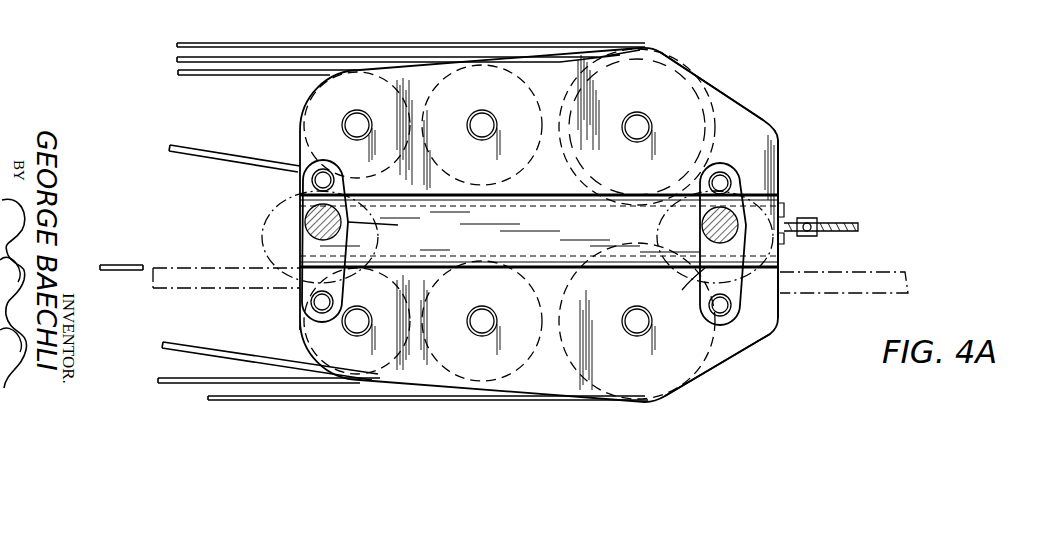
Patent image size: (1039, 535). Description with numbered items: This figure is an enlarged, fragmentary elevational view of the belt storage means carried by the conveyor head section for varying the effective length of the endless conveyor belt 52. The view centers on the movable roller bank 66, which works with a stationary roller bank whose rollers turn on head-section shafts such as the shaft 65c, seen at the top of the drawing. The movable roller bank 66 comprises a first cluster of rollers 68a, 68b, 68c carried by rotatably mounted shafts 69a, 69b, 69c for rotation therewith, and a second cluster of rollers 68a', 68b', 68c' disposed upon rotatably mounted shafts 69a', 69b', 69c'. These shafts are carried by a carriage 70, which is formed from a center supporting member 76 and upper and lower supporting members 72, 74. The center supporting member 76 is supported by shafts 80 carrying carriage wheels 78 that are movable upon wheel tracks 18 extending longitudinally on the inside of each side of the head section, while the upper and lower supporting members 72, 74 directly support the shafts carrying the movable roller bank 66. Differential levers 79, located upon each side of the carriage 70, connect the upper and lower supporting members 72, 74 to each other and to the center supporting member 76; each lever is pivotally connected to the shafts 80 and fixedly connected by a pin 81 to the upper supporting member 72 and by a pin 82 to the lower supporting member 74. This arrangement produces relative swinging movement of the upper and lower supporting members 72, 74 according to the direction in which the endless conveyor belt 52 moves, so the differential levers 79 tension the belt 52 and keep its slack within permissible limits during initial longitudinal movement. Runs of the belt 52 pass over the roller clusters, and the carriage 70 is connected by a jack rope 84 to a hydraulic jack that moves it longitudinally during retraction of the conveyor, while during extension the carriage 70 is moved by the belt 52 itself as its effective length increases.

The wheel tracks 18 is at (190, 268).
The endless conveyor belt 52 is at (248, 42).
The shaft 65c is at (439, 7).
The movable roller bank 66 is at (731, 81).
The roller 68a is at (325, 128).
The roller 68b is at (501, 103).
The roller 68c is at (637, 109).
The roller 68a' is at (357, 351).
The roller 68b' is at (481, 348).
The roller 68c' is at (637, 340).
The shaft 69a is at (302, 136).
The shaft 69b is at (477, 141).
The shaft 69c is at (627, 141).
The shaft 69a' is at (304, 330).
The shaft 69b' is at (474, 335).
The shaft 69c' is at (621, 341).
The carriage 70 is at (756, 94).
The upper supporting member 72 is at (780, 128).
The lower supporting member 74 is at (756, 336).
The center supporting member 76 is at (553, 215).
The carriage wheels 78 is at (492, 242).
The differential levers 79 is at (305, 250).
The shafts 80 is at (526, 257).
The pin 81 is at (313, 180).
The pin 82 is at (316, 305).
The jack rope 84 is at (838, 223).